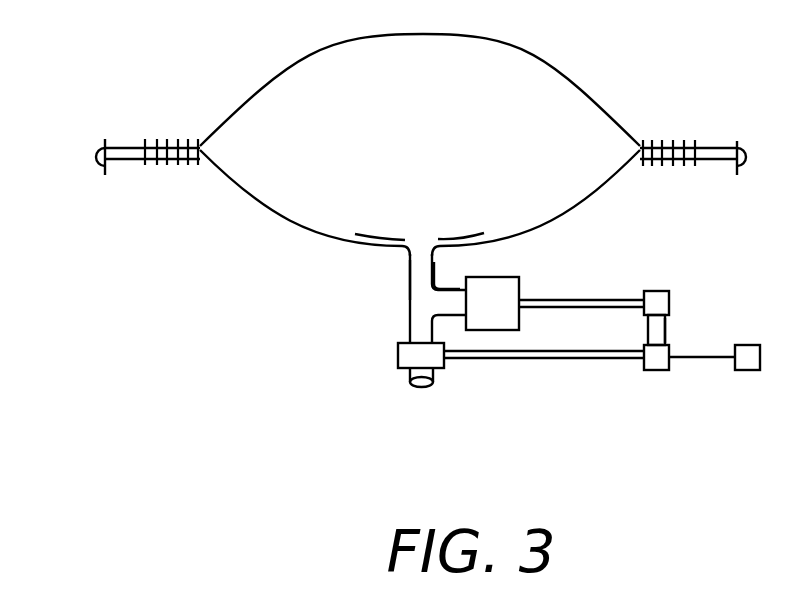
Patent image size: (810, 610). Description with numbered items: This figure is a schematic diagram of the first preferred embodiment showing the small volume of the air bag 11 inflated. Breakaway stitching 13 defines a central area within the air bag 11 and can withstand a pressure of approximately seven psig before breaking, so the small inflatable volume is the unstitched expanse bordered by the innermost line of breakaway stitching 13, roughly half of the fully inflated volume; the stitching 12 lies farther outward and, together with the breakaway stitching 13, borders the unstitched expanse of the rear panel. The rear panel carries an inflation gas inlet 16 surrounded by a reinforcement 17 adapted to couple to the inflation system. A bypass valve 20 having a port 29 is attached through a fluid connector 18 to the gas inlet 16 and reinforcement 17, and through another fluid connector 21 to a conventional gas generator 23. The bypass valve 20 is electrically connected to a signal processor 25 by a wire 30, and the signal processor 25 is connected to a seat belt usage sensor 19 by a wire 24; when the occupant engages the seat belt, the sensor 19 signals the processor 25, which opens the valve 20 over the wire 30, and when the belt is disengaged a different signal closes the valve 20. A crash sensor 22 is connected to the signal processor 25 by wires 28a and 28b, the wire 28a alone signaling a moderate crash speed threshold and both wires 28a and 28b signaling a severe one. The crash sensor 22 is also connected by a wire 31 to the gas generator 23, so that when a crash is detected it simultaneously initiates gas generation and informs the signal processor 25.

The air bag 11 is at (563, 77).
The stitching 12 is at (102, 130).
The breakaway stitching 13 is at (176, 130).
The inflation gas inlet 16 is at (420, 253).
The reinforcement 17 is at (388, 238).
The fluid connector 18 is at (409, 275).
The seat belt usage sensor 19 is at (747, 370).
The bypass valve 20 is at (398, 357).
The fluid connector 21 is at (450, 287).
The crash sensor 22 is at (657, 291).
The gas generator 23 is at (507, 277).
The wire 24 is at (715, 358).
The signal processor 25 is at (657, 370).
The wire 28a is at (648, 333).
The wire 28b is at (665, 328).
The port 29 is at (423, 388).
The wire 30 is at (520, 357).
The wire 31 is at (580, 298).